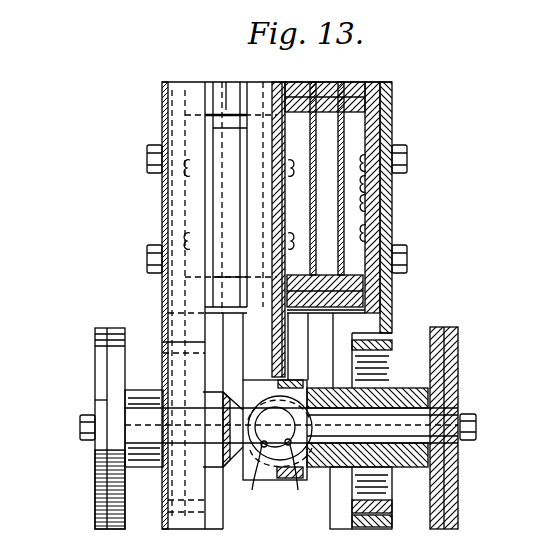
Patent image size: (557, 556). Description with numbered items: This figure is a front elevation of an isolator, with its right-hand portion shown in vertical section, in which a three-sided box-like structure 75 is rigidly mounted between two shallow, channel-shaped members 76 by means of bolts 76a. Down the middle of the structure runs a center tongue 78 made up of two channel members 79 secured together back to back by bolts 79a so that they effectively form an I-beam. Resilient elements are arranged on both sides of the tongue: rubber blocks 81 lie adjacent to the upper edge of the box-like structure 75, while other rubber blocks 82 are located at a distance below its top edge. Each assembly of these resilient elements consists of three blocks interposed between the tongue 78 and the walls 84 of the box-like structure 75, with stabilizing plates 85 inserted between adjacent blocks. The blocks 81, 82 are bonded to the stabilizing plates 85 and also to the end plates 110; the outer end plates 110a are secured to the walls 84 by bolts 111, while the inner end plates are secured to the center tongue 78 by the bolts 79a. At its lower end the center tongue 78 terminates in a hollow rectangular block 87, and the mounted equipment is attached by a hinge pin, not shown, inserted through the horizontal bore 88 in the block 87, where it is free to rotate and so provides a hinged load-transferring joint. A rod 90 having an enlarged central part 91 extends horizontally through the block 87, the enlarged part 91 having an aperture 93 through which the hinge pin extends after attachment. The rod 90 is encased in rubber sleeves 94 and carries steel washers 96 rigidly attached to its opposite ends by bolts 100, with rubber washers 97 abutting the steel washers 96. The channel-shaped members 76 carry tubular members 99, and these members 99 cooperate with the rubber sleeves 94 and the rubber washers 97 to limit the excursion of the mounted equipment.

The three-sided box-like structure 75 is at (431, 76).
The channel-shaped members 76 is at (168, 98).
The bolts 76a is at (147, 160).
The center tongue 78 is at (299, 78).
The channel members 79 is at (282, 82).
The bolts 79a is at (291, 162).
The rubber blocks 81 is at (232, 82).
The rubber blocks 82 is at (246, 310).
The walls 84 is at (185, 126).
The stabilizing plates 85 is at (238, 145).
The hollow rectangular block 87 is at (307, 381).
The horizontal bore 88 is at (258, 470).
The rod 90 is at (148, 412).
The enlarged central part 91 is at (304, 470).
The aperture 93 is at (290, 480).
The rubber sleeves 94 is at (140, 460).
The steel washers 96 is at (100, 362).
The rubber washers 97 is at (115, 330).
The tubular members 99 is at (376, 367).
The bolts 100 is at (80, 428).
The clip 110 is at (368, 200).
The outer end plates 110a is at (185, 185).
The bolts 111 is at (368, 183).